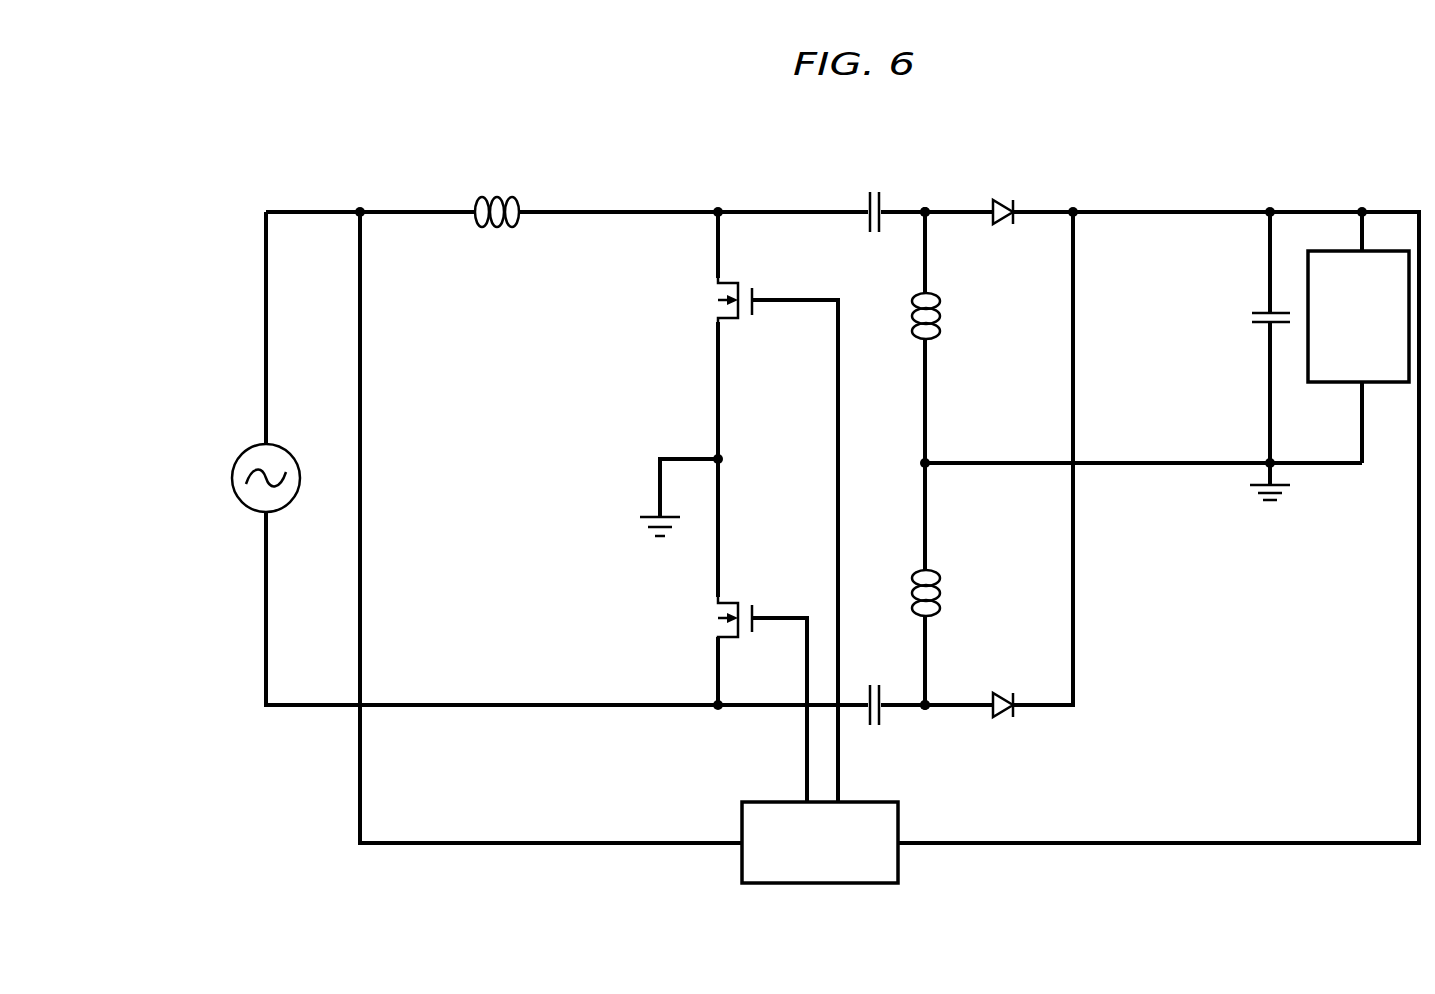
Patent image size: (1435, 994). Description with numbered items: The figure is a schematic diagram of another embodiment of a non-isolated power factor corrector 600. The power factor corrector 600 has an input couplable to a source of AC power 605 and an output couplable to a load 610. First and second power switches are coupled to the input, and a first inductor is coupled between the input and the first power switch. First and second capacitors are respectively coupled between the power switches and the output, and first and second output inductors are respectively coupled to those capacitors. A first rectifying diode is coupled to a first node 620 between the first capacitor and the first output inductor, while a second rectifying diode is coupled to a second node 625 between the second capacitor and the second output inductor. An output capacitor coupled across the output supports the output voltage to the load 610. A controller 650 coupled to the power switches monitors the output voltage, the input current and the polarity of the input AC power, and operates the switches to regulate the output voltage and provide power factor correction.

The non-isolated power factor corrector 600 is at (638, 108).
The source of AC power 605 is at (236, 462).
The load 610 is at (1388, 384).
The first node 620 is at (927, 215).
The second node 625 is at (927, 708).
The controller 650 is at (866, 885).